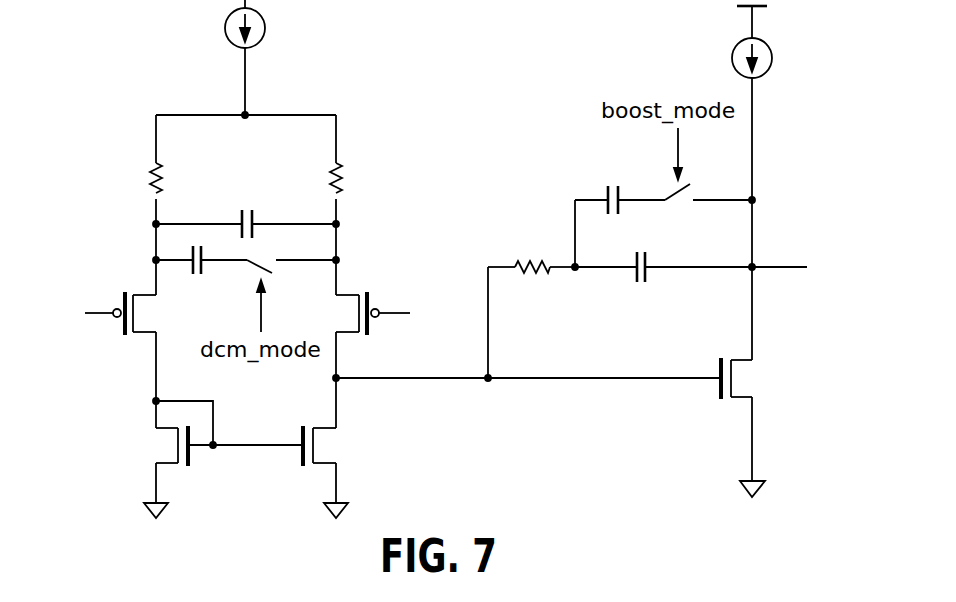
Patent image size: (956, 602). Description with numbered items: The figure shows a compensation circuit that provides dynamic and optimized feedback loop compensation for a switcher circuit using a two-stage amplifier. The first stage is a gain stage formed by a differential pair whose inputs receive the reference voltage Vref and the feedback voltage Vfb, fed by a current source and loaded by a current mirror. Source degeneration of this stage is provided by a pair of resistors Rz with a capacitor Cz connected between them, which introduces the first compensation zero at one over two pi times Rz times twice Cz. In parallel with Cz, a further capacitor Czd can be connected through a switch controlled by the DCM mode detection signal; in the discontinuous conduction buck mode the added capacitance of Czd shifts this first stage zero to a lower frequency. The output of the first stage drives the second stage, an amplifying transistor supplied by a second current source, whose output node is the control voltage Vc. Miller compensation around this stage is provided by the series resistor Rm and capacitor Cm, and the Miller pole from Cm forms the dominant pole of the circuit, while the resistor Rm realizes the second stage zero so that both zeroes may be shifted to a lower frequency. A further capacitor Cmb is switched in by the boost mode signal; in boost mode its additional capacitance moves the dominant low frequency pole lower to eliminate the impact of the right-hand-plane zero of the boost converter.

The source degeneration resistor Rz is at (135, 159).
The source degeneration capacitor Cz is at (246, 200).
The DCM zero capacitor Czd is at (246, 279).
The reference voltage input Vref is at (94, 311).
The feedback voltage input Vfb is at (394, 312).
The second stage zero resistor Rm is at (531, 293).
The Miller capacitor Cm is at (663, 289).
The boost mode capacitor Cmb is at (650, 207).
The control voltage output Vc is at (798, 270).